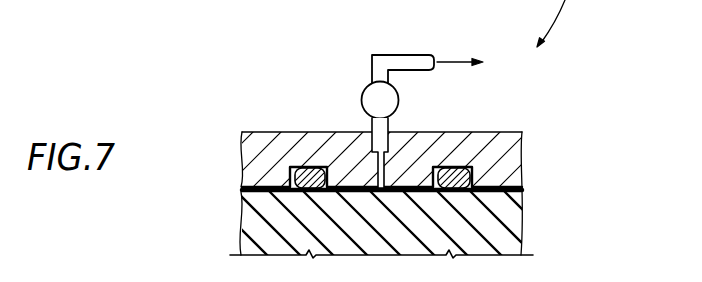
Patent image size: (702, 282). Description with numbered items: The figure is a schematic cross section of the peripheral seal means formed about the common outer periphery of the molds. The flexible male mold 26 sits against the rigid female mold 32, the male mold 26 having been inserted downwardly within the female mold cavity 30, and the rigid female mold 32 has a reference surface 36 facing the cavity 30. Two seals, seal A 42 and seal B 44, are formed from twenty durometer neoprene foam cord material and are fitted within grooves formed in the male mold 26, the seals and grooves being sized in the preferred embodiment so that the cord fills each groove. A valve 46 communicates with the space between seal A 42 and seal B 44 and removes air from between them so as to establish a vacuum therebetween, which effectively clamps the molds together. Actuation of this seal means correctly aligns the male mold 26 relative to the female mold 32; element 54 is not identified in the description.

The male mold 26 is at (277, 131).
The rigid female mold 32 is at (510, 217).
The seal A 42 is at (293, 178).
The seal B 44 is at (463, 173).
The valve 46 is at (365, 90).
The reference surface 36 is at (93, 0).
The female mold cavity 30 is at (198, 0).
The element 54 is at (162, 275).